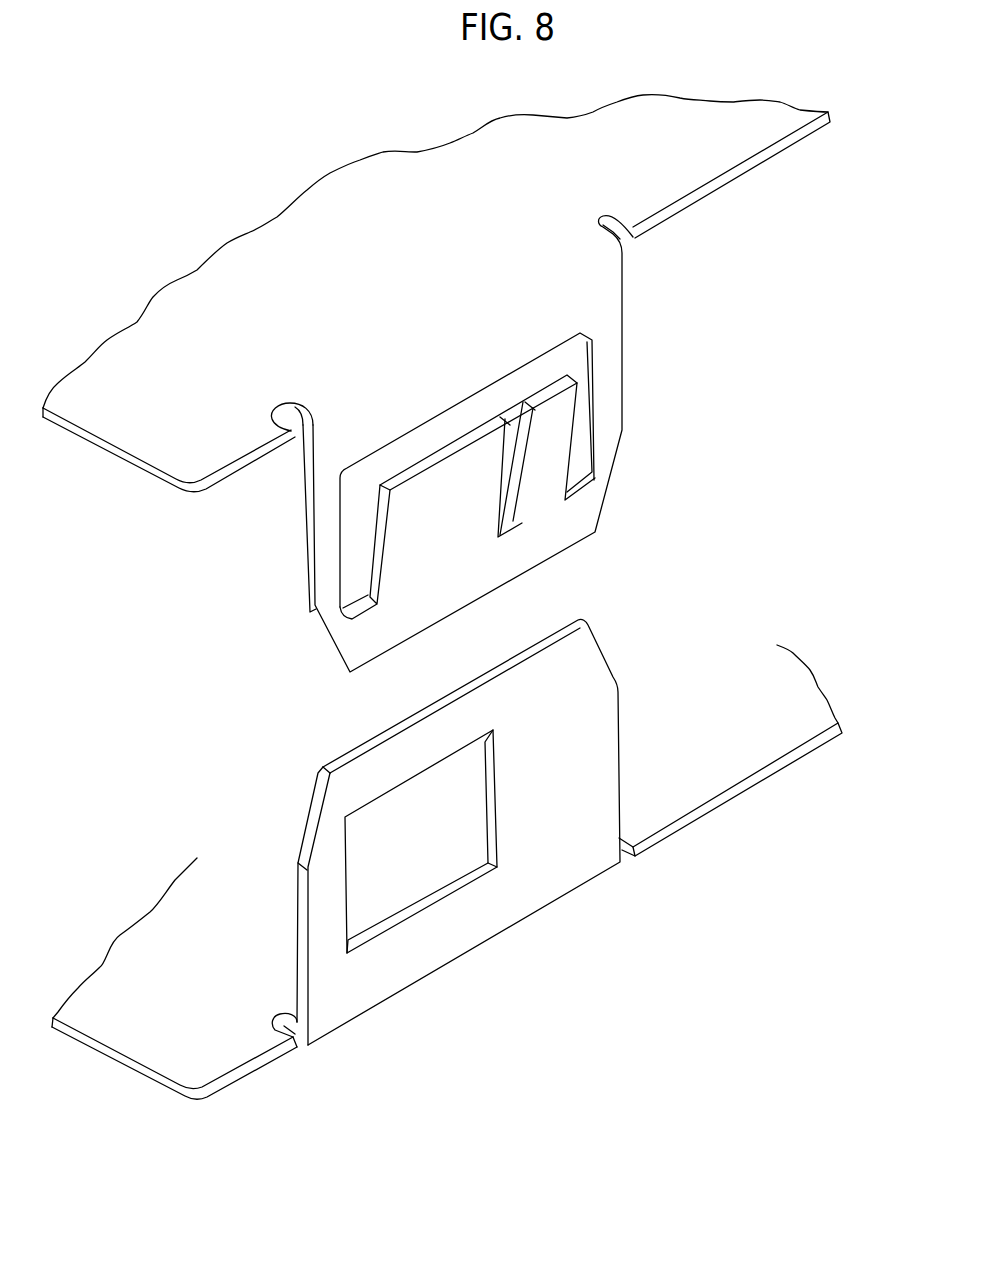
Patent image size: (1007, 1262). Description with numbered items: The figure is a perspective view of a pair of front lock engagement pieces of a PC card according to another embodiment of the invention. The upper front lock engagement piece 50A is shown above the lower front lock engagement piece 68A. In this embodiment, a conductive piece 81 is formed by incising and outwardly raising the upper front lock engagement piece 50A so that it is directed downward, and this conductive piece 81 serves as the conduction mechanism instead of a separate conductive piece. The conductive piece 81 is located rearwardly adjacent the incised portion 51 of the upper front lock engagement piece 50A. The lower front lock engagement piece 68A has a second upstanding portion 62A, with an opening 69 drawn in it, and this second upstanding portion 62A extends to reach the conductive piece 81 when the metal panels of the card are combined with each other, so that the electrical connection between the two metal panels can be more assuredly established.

The upper front lock engagement piece 50A is at (455, 383).
The incised portion 51 is at (467, 490).
The conductive piece 81 is at (558, 418).
The lower front lock engagement piece 68A is at (477, 822).
The second upstanding portion 62A is at (517, 832).
The window opening 69 is at (412, 907).